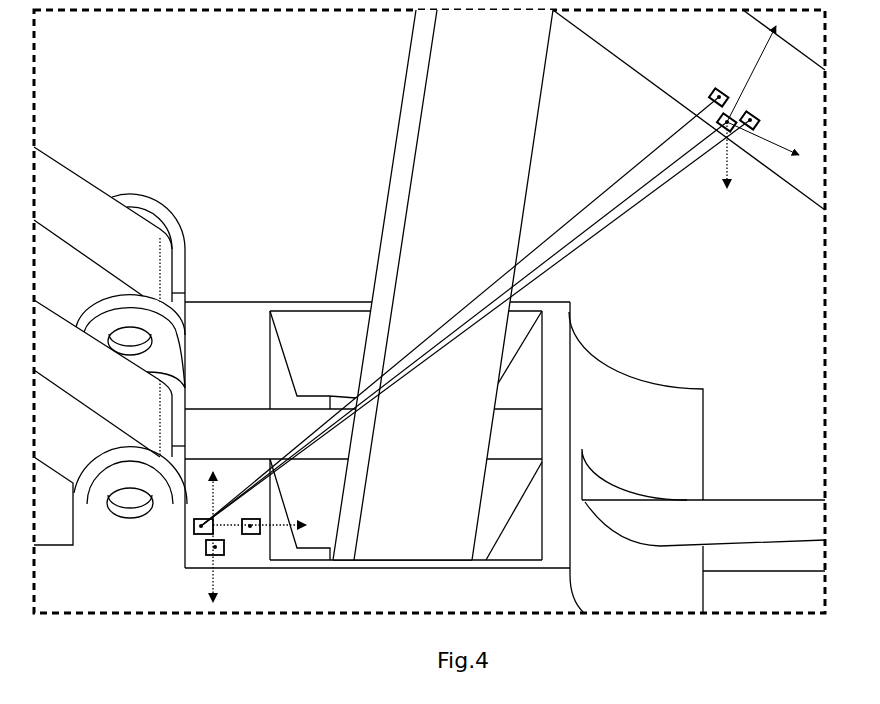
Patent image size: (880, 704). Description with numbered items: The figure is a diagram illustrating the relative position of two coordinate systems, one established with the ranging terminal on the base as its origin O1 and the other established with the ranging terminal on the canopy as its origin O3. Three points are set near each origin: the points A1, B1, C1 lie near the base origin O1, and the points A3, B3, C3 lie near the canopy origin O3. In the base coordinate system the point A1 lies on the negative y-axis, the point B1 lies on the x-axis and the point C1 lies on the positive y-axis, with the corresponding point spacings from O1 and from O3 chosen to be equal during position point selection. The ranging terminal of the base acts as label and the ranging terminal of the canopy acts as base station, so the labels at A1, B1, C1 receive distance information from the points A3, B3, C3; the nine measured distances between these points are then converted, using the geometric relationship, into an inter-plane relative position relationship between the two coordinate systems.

The point A1 is at (196, 527).
The point B1 is at (207, 550).
The point C1 is at (252, 519).
The origin of base coordinate system O1 is at (272, 539).
The point A3 is at (711, 94).
The point B3 is at (720, 121).
The point C3 is at (756, 120).
The origin of canopy coordinate system O3 is at (770, 111).